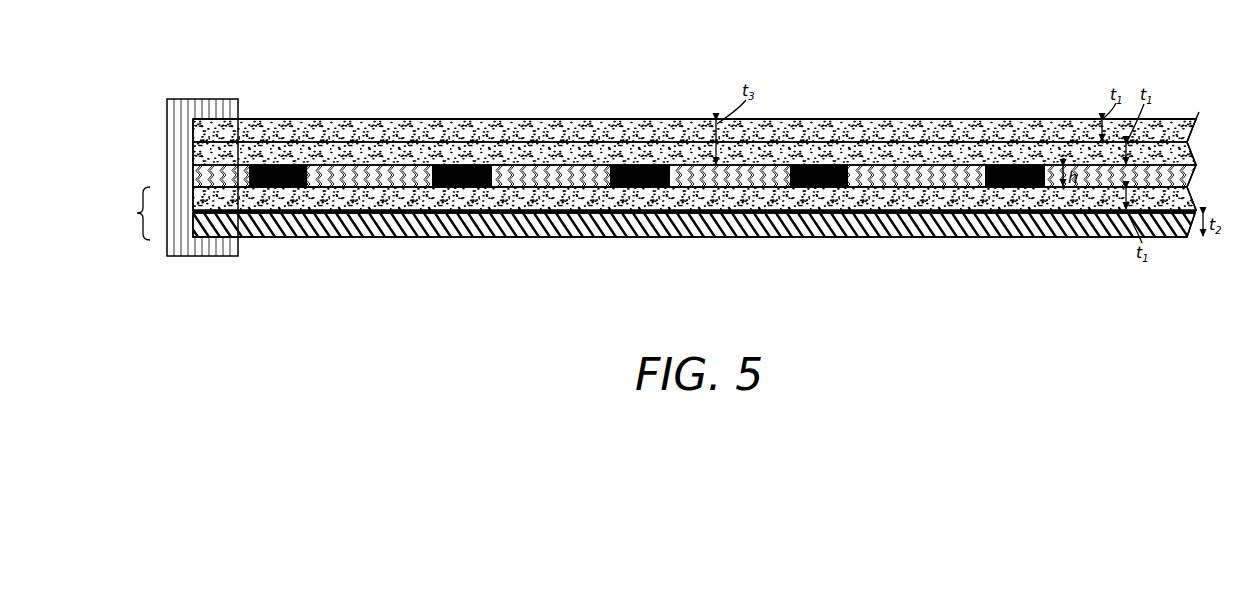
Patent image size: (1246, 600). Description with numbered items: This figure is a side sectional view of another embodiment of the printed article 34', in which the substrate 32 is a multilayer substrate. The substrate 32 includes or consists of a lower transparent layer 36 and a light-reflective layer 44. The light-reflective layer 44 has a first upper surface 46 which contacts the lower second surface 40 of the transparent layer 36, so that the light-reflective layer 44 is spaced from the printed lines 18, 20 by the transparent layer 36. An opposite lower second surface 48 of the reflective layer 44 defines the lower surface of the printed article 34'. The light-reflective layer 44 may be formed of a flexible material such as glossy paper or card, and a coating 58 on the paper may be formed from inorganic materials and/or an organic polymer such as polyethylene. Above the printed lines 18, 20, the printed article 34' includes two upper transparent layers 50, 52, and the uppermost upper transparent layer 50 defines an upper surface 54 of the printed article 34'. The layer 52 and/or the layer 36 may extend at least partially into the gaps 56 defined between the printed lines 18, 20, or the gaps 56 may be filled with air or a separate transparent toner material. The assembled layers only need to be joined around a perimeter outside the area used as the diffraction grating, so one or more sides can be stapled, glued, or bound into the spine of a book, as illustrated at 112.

The binding 112 is at (209, 99).
The printed article 34' is at (696, 133).
The upper transparent layer 50 is at (290, 128).
The upper surface 54 is at (797, 118).
The upper transparent layer 52 is at (358, 160).
The gaps 56 is at (543, 176).
The printed lines 18 is at (462, 168).
The printed lines 20 is at (633, 168).
The lower transparent layer 36 is at (200, 197).
The first upper surface 46 is at (948, 187).
The coating 58 is at (543, 213).
The lower second surface 48 is at (737, 238).
The lower second surface 40 is at (968, 215).
The light-reflective layer 44 is at (287, 232).
The substrate 32 is at (130, 213).